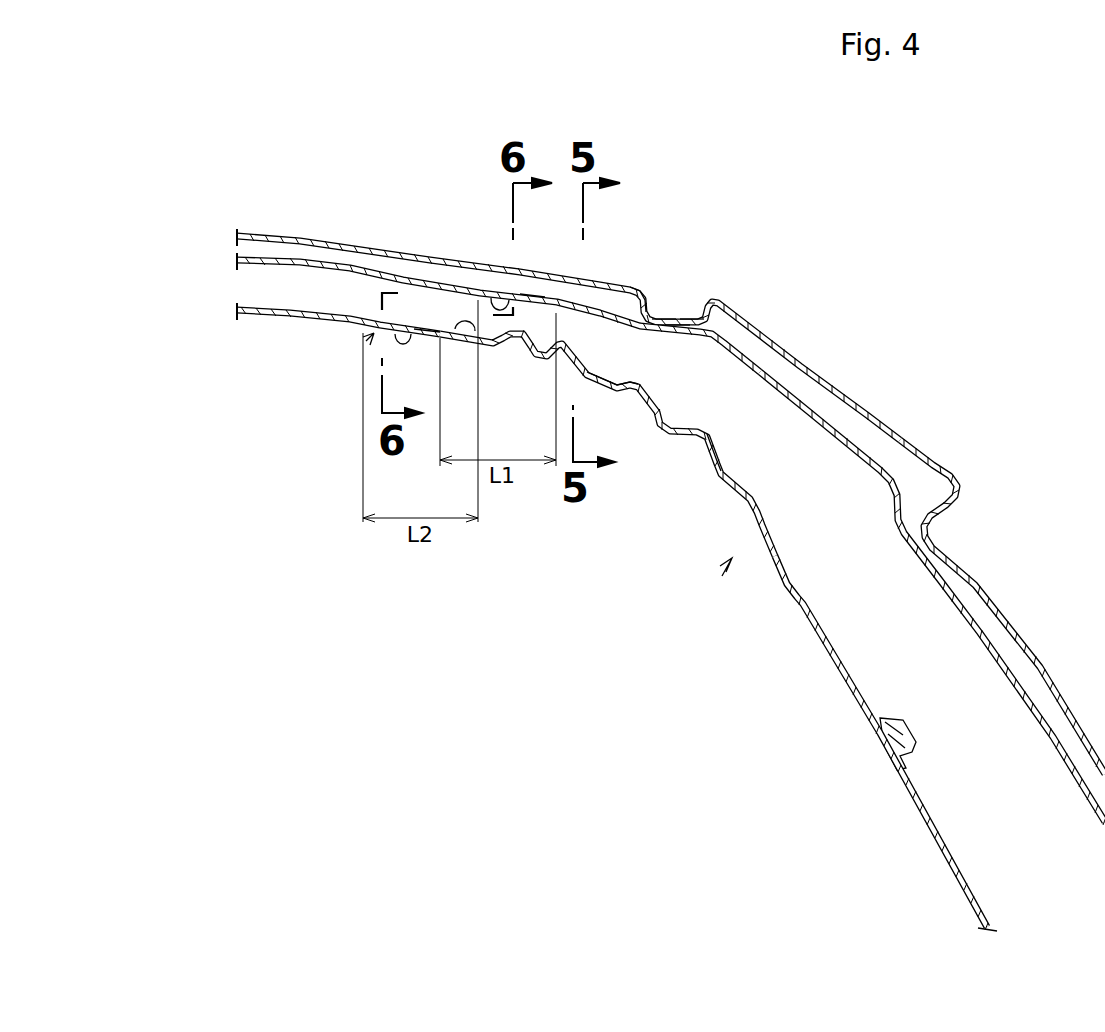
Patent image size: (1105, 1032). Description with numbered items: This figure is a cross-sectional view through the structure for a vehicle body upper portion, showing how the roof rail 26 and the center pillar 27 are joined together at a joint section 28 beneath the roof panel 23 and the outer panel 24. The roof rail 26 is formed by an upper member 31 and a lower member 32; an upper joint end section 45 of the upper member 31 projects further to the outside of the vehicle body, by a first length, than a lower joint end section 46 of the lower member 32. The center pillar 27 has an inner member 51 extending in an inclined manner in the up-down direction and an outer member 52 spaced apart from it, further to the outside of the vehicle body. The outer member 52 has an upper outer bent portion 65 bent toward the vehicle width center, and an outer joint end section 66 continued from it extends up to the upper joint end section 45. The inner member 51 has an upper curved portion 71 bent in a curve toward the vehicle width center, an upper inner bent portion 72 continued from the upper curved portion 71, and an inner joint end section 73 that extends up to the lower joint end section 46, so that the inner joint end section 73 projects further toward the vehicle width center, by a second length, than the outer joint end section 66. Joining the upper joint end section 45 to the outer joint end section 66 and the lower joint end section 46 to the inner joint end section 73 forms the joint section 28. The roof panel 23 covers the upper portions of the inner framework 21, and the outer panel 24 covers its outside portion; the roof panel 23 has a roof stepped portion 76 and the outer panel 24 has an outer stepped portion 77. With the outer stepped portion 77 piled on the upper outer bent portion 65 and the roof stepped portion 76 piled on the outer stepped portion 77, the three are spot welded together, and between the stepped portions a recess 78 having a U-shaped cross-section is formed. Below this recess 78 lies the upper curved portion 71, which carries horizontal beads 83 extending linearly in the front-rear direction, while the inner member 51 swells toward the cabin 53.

The inner framework 21 is at (731, 559).
The roof panel 23 is at (297, 238).
The outer panel 24 is at (965, 563).
The roof rail 26 is at (275, 413).
The center pillar 27 is at (725, 666).
The joint section 28 is at (374, 333).
The upper member 31 is at (307, 267).
The lower member 32 is at (241, 316).
The upper joint end section 45 is at (531, 294).
The lower joint end section 46 is at (427, 329).
The inner member 51 is at (822, 630).
The outer member 52 is at (980, 633).
The cabin 53 is at (385, 661).
The upper outer bent portion 65 is at (621, 318).
The outer joint end section 66 is at (492, 298).
The upper curved portion 71 is at (637, 392).
The upper inner bent portion 72 is at (466, 338).
The inner joint end section 73 is at (410, 328).
The roof stepped portion 76 is at (664, 316).
The outer stepped portion 77 is at (691, 316).
The recess 78 is at (678, 318).
The horizontal beads 83 is at (604, 386).